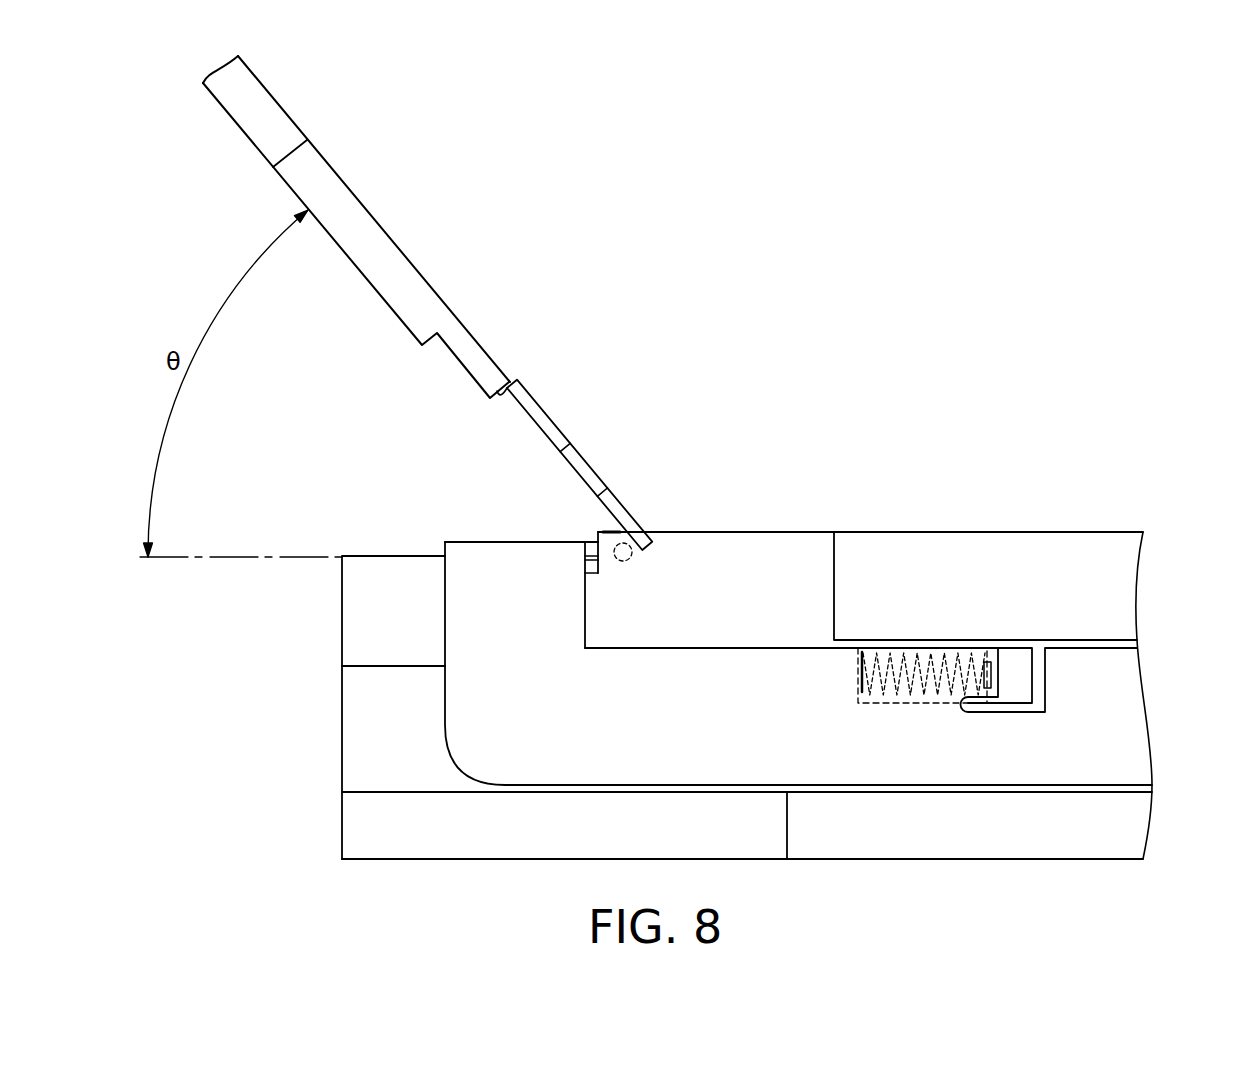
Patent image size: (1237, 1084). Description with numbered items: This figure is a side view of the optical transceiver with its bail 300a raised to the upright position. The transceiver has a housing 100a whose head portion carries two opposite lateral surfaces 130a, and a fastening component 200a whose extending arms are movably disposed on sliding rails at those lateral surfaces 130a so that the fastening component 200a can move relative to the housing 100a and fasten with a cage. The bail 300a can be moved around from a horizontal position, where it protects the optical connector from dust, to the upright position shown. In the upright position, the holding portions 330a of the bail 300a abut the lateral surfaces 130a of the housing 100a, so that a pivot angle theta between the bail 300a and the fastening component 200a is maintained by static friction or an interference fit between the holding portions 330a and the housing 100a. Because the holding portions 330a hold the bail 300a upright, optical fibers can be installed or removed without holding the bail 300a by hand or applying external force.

The bail 300a is at (397, 202).
The housing 100a is at (769, 656).
The fastening component 200a is at (506, 577).
The lateral surface 130a is at (758, 547).
The holding portion 330a is at (640, 546).